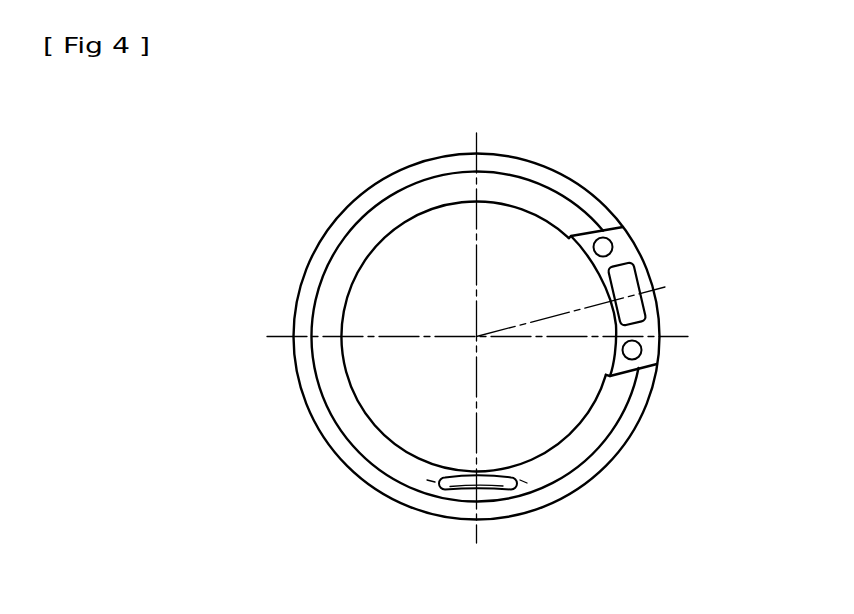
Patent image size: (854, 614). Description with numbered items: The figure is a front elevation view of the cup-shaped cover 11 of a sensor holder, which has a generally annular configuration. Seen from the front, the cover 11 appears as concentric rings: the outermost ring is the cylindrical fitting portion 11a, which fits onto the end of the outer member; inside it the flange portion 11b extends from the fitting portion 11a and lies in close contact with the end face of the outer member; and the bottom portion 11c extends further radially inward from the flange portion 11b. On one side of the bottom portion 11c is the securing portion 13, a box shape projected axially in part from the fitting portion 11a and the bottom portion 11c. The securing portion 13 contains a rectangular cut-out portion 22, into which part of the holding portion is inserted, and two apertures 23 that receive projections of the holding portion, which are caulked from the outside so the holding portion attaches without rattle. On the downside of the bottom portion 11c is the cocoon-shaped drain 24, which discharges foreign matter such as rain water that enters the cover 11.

The cover 11 is at (463, 100).
The cylindrical fitting portion 11a is at (345, 207).
The flange portion 11b is at (392, 183).
The bottom portion 11c is at (432, 200).
The securing portion 13 is at (630, 255).
The cut-out portion 22 is at (632, 303).
The apertures 23 is at (603, 247).
The drain 24 is at (450, 488).